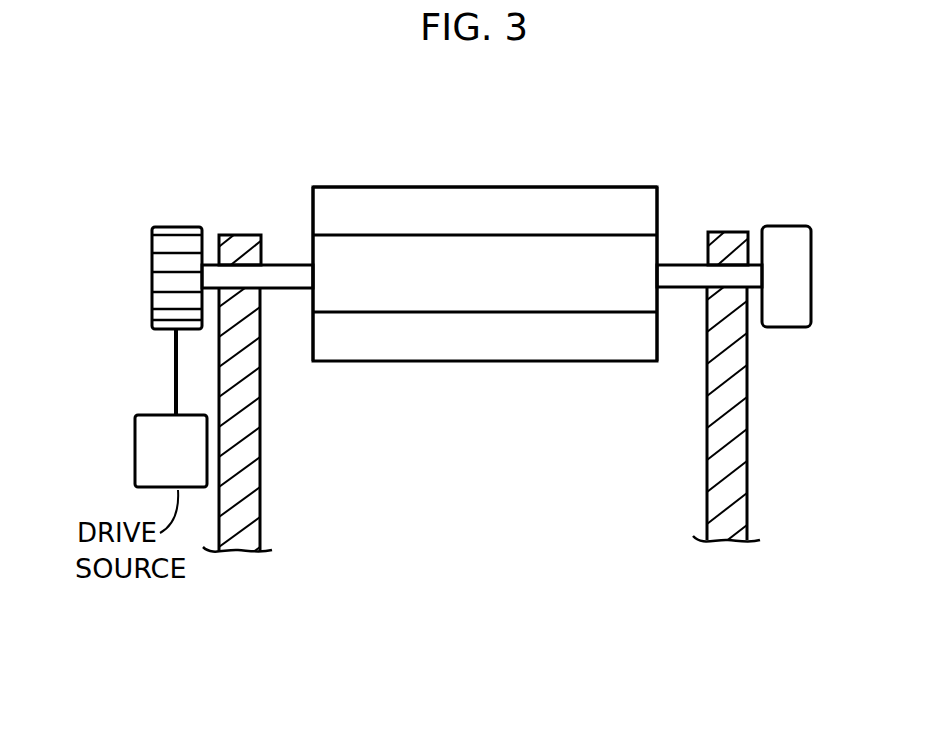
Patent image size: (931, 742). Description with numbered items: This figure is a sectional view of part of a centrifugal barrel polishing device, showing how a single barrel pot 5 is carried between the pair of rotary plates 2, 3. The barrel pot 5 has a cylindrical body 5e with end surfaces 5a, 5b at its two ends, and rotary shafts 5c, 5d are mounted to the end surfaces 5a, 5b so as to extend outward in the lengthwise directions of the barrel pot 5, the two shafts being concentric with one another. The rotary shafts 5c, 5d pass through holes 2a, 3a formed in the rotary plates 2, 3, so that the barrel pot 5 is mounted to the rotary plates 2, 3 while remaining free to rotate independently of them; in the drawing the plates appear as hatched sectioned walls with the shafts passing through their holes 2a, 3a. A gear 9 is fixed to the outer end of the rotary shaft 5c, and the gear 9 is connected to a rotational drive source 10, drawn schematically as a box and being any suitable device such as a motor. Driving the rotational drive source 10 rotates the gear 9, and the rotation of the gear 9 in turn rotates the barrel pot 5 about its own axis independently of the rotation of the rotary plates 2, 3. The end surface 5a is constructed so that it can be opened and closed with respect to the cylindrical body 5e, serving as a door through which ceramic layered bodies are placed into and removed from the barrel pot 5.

The rotary plate 2 is at (729, 230).
The hole 2a is at (723, 290).
The rotary plate 3 is at (243, 229).
The hole 3a is at (242, 292).
The barrel pot 5 is at (556, 186).
The end surface 5a is at (313, 338).
The end surface 5b is at (657, 328).
The rotary shaft 5c is at (288, 265).
The rotary shaft 5d is at (684, 265).
The cylindrical body 5e is at (475, 186).
The gear 9 is at (175, 227).
The rotational drive source 10 is at (135, 450).